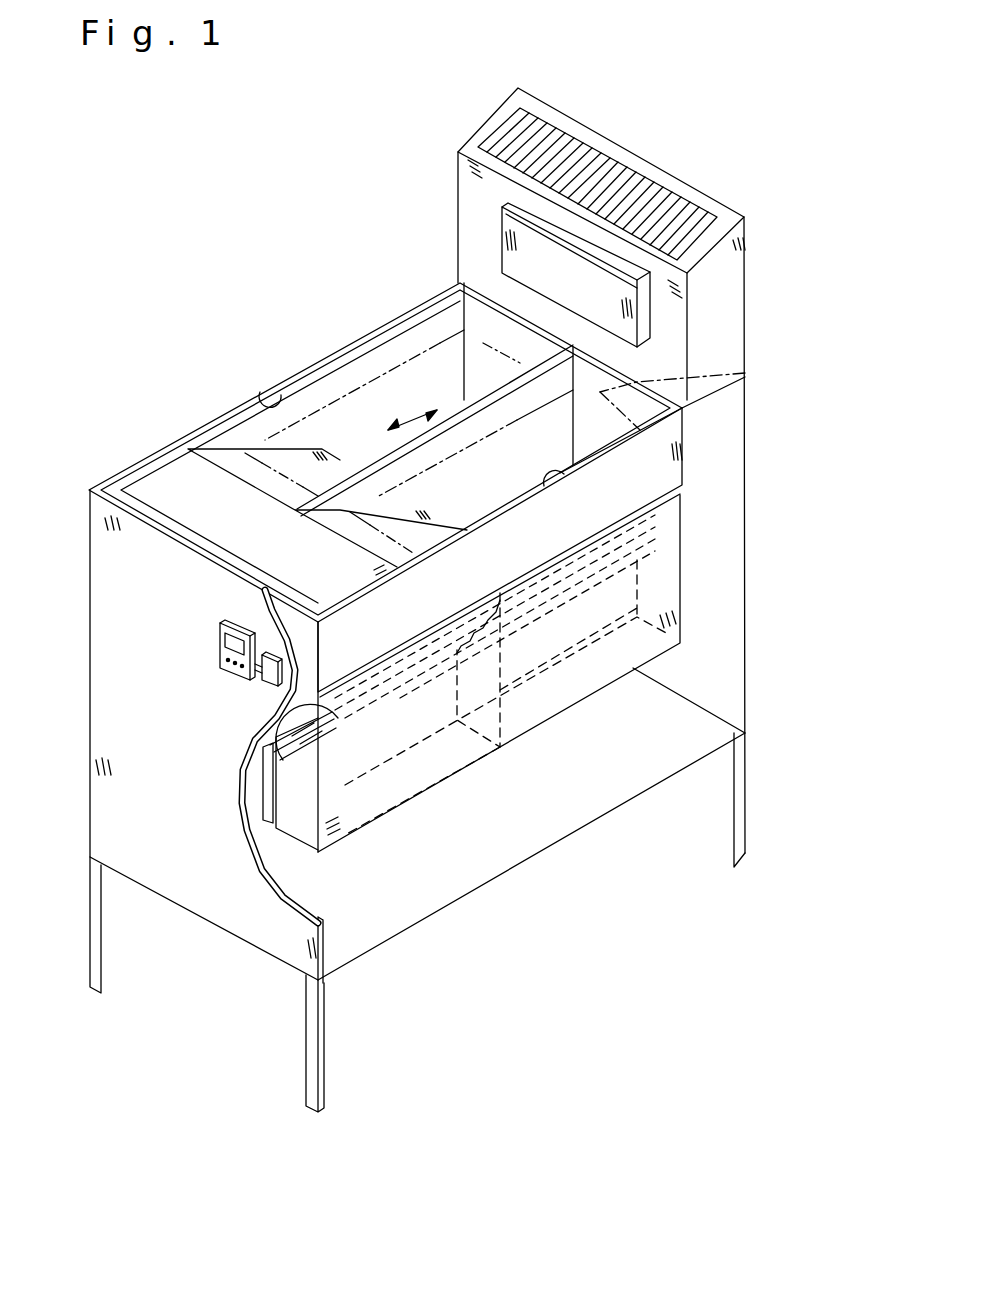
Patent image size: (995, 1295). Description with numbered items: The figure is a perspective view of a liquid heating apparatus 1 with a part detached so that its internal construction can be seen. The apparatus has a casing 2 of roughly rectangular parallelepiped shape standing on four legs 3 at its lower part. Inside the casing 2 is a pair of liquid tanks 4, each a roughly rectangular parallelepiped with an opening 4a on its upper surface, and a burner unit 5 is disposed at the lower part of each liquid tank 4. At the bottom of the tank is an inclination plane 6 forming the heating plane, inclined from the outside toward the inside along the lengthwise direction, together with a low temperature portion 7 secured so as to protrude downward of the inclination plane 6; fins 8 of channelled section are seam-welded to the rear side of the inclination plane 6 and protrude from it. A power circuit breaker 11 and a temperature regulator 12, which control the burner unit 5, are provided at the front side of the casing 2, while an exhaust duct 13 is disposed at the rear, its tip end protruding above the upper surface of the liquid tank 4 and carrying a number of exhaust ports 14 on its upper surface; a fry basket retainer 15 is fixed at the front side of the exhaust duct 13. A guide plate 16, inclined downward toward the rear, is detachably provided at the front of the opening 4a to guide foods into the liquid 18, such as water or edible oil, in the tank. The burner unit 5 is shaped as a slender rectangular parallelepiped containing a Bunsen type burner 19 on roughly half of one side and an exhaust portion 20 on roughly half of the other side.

The liquid heating apparatus 1 is at (776, 228).
The casing 2 is at (88, 490).
The legs 3 is at (745, 795).
The liquid tank 4 is at (374, 366).
The opening 4a is at (270, 400).
The burner unit 5 is at (686, 606).
The inclination plane 6 is at (276, 745).
The low temperature portion 7 is at (260, 808).
The fins 8 is at (305, 745).
The power circuit breaker 11 is at (267, 684).
The temperature regulator 12 is at (220, 648).
The exhaust duct 13 is at (745, 308).
The exhaust ports 14 is at (636, 173).
The fry basket retainer 15 is at (508, 240).
The guide plate 16 is at (380, 527).
The liquid 18 is at (443, 333).
The burner 19 is at (417, 778).
The exhaust portion 20 is at (580, 687).